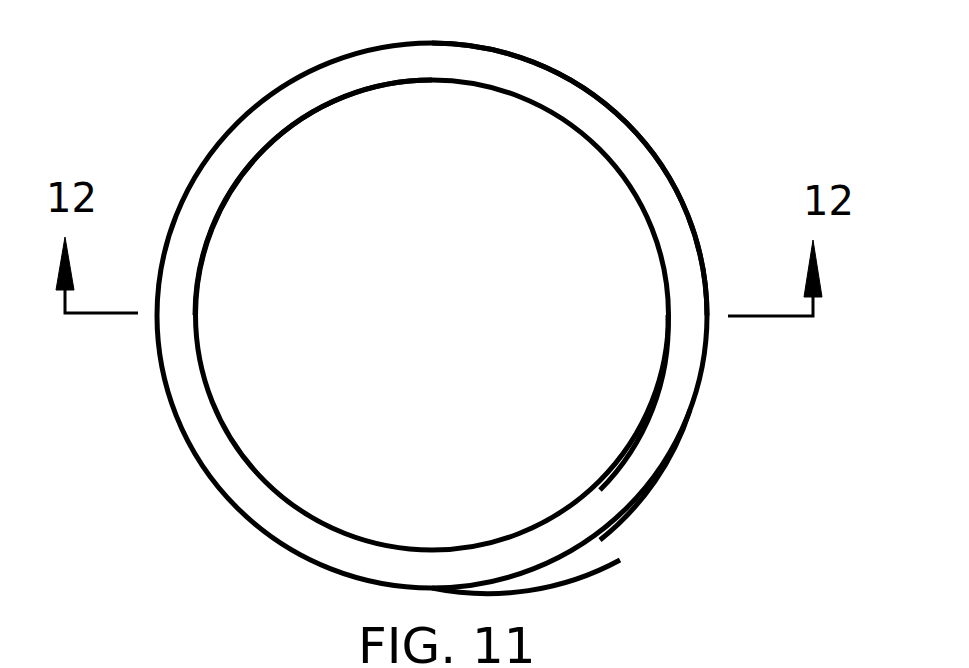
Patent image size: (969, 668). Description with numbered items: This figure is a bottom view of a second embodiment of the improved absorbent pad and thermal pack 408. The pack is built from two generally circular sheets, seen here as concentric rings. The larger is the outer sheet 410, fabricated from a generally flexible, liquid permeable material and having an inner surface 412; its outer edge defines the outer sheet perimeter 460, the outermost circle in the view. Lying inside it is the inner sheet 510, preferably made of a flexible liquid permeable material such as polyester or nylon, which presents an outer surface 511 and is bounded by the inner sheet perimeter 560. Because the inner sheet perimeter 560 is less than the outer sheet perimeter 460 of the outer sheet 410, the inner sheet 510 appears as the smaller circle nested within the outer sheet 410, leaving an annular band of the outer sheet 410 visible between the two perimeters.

The absorbent pad and thermal pack 408 is at (647, 81).
The outer sheet 410 is at (585, 542).
The inner surface 412 is at (648, 467).
The outer sheet perimeter 460 is at (645, 138).
The inner sheet 510 is at (503, 103).
The outer surface 511 is at (283, 147).
The inner sheet perimeter 560 is at (652, 375).